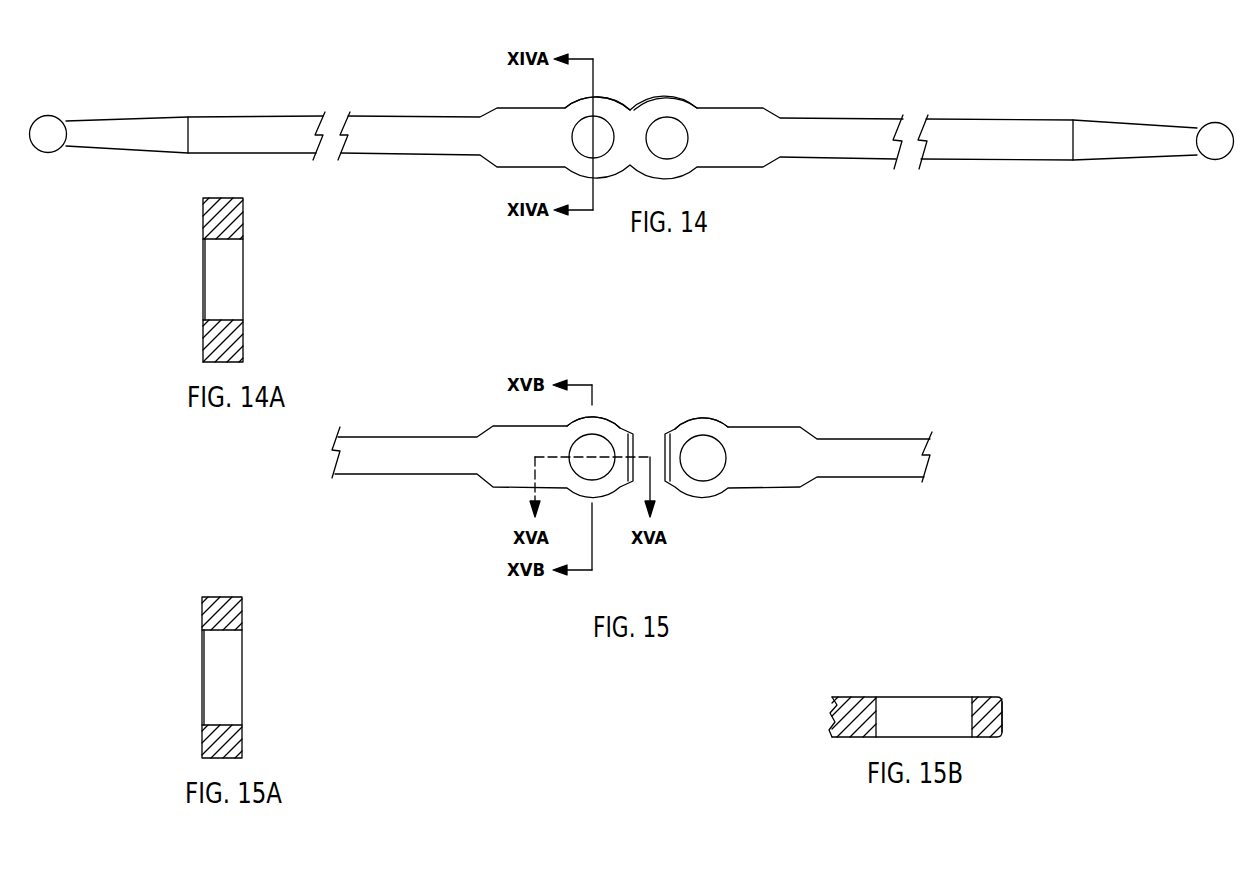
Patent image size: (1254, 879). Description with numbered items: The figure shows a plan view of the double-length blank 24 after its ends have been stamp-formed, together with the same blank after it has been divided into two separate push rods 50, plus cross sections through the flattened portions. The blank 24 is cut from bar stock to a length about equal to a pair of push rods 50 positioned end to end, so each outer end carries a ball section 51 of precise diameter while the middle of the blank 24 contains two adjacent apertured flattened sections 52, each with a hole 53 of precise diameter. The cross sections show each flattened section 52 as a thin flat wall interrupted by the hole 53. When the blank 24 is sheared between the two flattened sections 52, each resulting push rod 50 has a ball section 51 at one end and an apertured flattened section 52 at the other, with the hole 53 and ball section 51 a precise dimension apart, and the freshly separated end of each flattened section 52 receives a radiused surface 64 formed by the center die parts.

In FIG. 14, the blank 24 is at (631, 107).
In FIG. 14, the ball section 51 is at (632, 119).
In FIG. 14A, the push rod 50 is at (168, 280).
In FIG. 15, the push rod 50 is at (632, 427).
In FIG. 15A, the push rod 50 is at (166, 677).
In FIG. 15B, the push rod 50 is at (910, 678).
In FIG. 14, the apertured flattened section 52 is at (624, 91).
In FIG. 14A, the apertured flattened section 52 is at (204, 280).
In FIG. 15, the apertured flattened section 52 is at (643, 410).
In FIG. 15A, the apertured flattened section 52 is at (202, 677).
In FIG. 15B, the apertured flattened section 52 is at (929, 695).
In FIG. 14, the hole 53 is at (630, 112).
In FIG. 14A, the hole 53 is at (248, 278).
In FIG. 15, the hole 53 is at (647, 434).
In FIG. 15A, the hole 53 is at (247, 677).
In FIG. 15B, the hole 53 is at (924, 693).
In FIG. 15, the radiused surface 64 is at (649, 441).
In FIG. 15B, the radiused surface 64 is at (1029, 723).